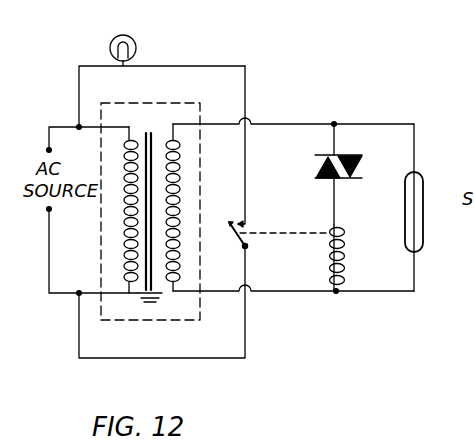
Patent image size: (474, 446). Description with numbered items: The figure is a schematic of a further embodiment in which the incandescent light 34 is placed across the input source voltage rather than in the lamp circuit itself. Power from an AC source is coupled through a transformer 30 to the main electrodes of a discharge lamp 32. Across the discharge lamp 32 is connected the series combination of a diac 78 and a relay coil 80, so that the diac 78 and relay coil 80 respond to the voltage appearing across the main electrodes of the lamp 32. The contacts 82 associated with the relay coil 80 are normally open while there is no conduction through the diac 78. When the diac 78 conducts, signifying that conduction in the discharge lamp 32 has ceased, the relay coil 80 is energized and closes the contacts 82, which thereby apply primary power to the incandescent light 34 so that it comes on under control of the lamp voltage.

The transformer 30 is at (104, 249).
The discharge lamp 32 is at (423, 178).
The incandescent light 34 is at (137, 47).
The diac 78 is at (362, 155).
The relay coil 80 is at (342, 258).
The contacts 82 is at (251, 239).